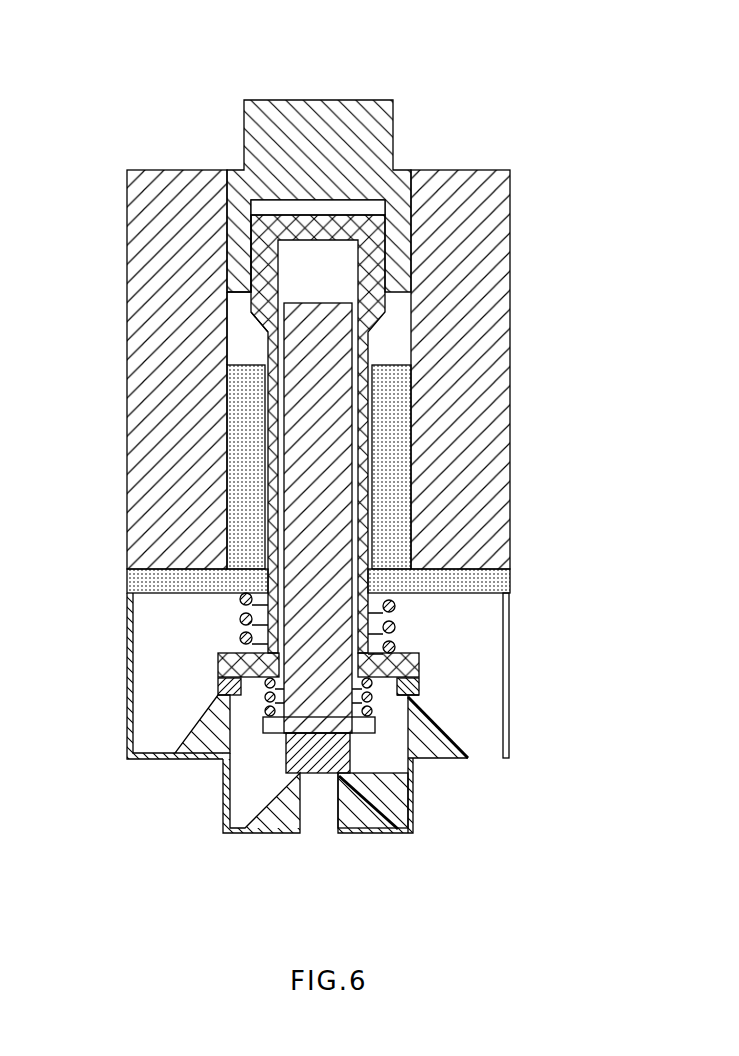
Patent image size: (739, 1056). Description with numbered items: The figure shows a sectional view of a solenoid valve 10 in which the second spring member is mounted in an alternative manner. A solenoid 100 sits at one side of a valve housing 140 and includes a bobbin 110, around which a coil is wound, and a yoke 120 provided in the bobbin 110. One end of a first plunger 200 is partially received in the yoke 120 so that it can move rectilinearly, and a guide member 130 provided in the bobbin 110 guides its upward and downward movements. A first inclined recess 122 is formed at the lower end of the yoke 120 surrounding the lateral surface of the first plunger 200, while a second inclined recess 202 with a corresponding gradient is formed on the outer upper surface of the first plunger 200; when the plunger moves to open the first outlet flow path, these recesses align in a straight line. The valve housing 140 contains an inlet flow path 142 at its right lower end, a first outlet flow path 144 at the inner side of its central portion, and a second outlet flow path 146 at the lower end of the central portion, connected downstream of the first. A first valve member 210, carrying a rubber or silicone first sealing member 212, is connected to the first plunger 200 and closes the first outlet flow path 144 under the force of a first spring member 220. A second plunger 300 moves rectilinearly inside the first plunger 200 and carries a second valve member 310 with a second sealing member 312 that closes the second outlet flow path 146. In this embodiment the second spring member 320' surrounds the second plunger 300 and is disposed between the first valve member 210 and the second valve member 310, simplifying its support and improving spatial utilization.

The solenoid valve 10 is at (92, 40).
The solenoid 100 is at (319, 334).
The bobbin 110 is at (498, 212).
The yoke 120 is at (377, 136).
The first inclined recess 122 is at (238, 288).
The guide member 130 is at (127, 580).
The valve housing 140 is at (128, 681).
The inlet flow path 142 is at (487, 758).
The first outlet flow path 144 is at (218, 690).
The second outlet flow path 146 is at (296, 778).
The first plunger 200 is at (367, 350).
The second inclined recess 202 is at (262, 338).
The first valve member 210 is at (420, 663).
The first sealing member 212 is at (218, 683).
The first spring member 220 is at (397, 607).
The second plunger 300 is at (335, 455).
The second valve member 310 is at (409, 762).
The second sealing member 312 is at (325, 763).
The second spring member 320' is at (421, 712).